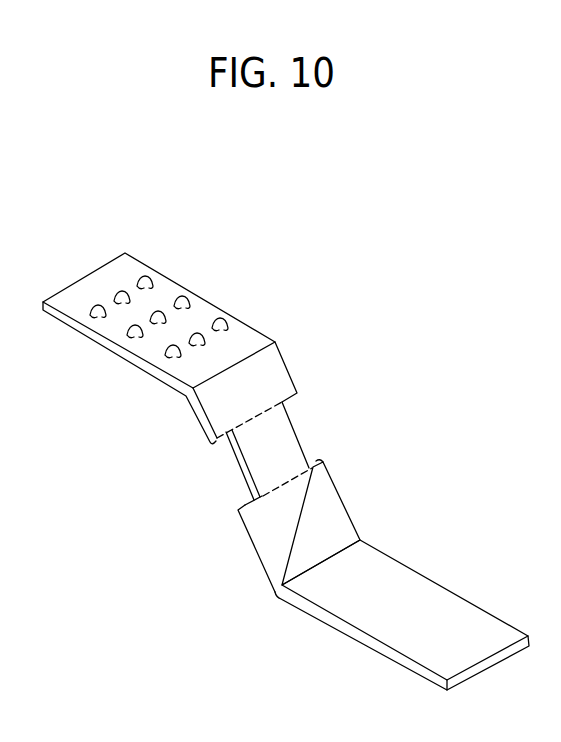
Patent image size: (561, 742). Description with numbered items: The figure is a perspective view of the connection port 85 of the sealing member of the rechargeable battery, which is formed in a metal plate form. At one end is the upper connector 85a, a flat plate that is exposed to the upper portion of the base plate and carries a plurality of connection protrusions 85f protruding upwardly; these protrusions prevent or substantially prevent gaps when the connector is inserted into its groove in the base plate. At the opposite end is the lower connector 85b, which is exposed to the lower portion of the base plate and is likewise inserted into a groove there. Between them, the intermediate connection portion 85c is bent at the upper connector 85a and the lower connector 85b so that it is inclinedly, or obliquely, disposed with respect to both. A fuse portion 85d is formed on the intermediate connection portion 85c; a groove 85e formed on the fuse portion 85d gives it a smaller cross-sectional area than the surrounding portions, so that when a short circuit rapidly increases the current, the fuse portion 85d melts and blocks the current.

The connection port 85 is at (283, 449).
The upper connector 85a is at (158, 343).
The lower connector 85b is at (430, 603).
The intermediate connection portion 85c is at (283, 532).
The fuse portion 85d is at (277, 443).
The groove 85e is at (245, 470).
The connection protrusions 85f is at (97, 305).